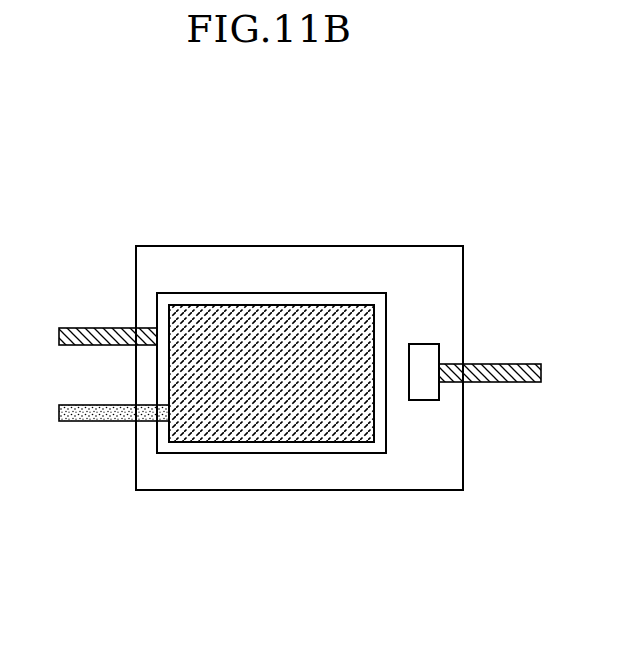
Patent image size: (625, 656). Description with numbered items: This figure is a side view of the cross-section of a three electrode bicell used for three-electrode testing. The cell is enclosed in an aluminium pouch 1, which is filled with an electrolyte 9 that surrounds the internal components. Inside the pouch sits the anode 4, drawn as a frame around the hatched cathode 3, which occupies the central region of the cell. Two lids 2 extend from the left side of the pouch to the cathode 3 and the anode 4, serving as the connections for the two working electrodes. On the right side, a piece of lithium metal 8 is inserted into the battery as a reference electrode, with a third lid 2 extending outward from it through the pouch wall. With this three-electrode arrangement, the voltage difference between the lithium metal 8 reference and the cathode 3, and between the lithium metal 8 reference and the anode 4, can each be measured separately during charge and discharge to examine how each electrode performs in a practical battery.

The aluminium pouch 1 is at (136, 274).
The lid 2 is at (302, 375).
The cathode 3 is at (212, 442).
The anode 4 is at (310, 453).
The lithium metal 8 is at (484, 348).
The electrolyte 9 is at (256, 262).